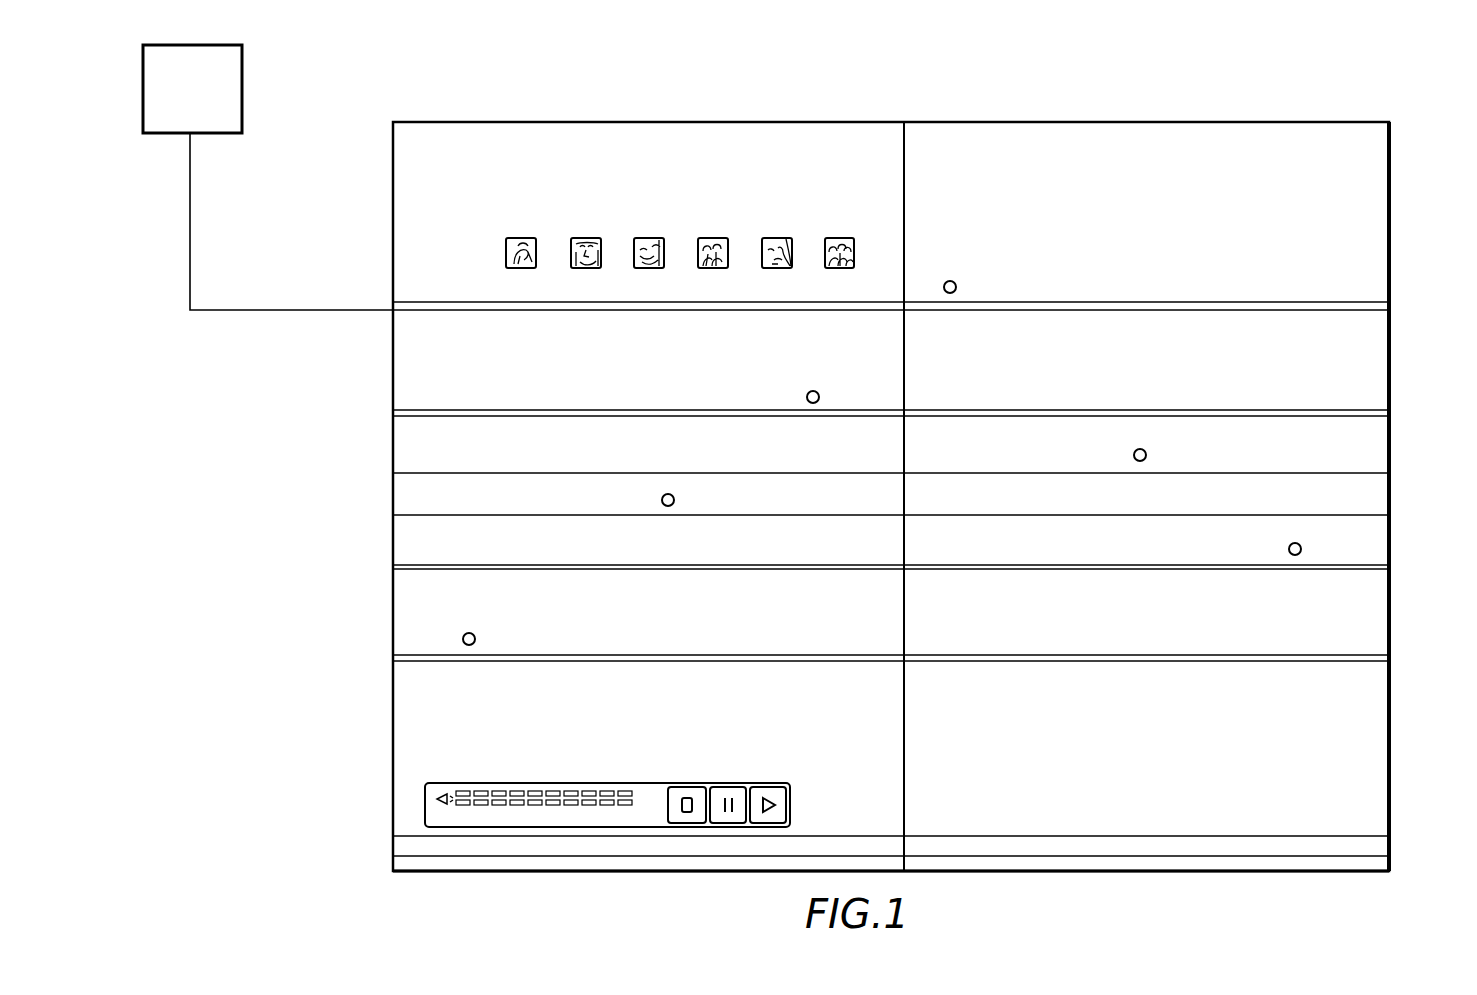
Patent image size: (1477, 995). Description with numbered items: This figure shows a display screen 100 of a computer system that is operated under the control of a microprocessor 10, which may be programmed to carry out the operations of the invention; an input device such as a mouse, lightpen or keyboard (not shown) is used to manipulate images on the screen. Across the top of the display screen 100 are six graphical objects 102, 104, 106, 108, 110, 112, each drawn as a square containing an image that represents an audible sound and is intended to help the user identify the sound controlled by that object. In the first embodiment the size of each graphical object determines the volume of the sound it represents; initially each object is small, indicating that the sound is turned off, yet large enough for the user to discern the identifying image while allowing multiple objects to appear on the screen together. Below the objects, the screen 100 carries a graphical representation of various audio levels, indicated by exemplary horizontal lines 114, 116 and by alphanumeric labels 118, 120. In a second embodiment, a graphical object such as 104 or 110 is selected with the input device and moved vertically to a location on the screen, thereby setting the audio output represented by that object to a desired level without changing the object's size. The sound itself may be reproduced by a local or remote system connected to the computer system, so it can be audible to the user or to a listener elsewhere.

The microprocessor 10 is at (238, 45).
The display screen 100 is at (1168, 120).
The graphical object 102 is at (520, 238).
The graphical object 104 is at (585, 238).
The graphical object 106 is at (648, 238).
The graphical object 108 is at (713, 238).
The graphical object 110 is at (776, 238).
The graphical object 112 is at (840, 238).
The horizontal line 114 is at (1352, 304).
The horizontal line 116 is at (1345, 412).
The alphanumeric label 118 is at (950, 281).
The alphanumeric label 120 is at (1147, 456).